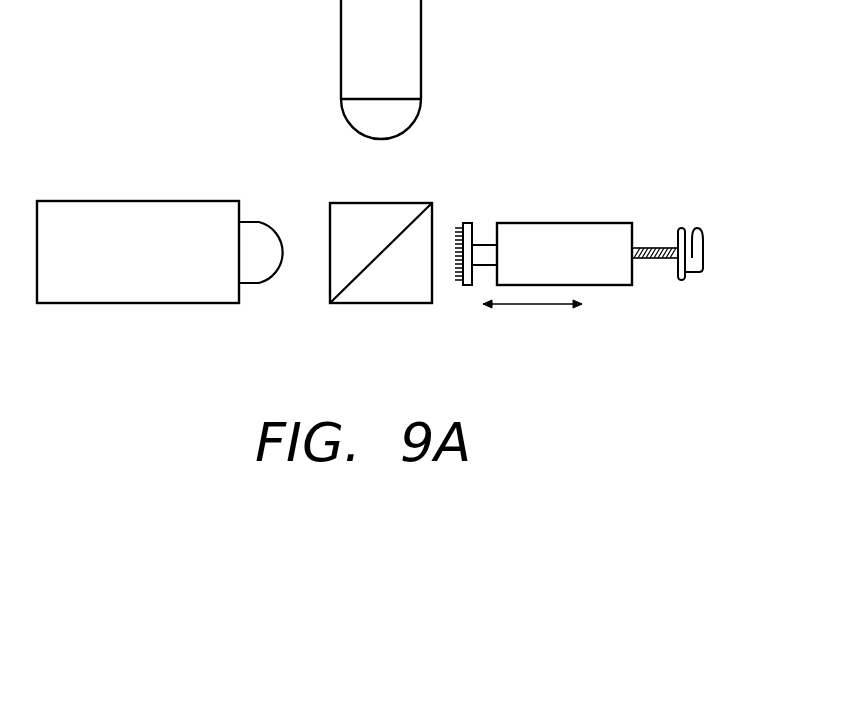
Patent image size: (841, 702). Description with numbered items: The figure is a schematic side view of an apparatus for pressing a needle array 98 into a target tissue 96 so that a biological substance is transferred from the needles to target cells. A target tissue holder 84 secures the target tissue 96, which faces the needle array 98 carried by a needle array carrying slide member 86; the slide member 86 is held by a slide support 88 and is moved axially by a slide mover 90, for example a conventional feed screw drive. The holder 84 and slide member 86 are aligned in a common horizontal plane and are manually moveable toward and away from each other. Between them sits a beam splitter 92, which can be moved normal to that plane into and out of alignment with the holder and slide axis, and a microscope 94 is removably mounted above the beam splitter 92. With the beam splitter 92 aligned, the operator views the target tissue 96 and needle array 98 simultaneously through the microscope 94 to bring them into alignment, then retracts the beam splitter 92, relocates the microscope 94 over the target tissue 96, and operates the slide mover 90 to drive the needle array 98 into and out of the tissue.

The target tissue holder 84 is at (117, 201).
The needle array carrying slide member 86 is at (479, 240).
The slide support 88 is at (557, 223).
The slide mover 90 is at (657, 222).
The beam splitter 92 is at (380, 203).
The microscope 94 is at (421, 44).
The target tissue 96 is at (246, 222).
The needle array 98 is at (463, 286).